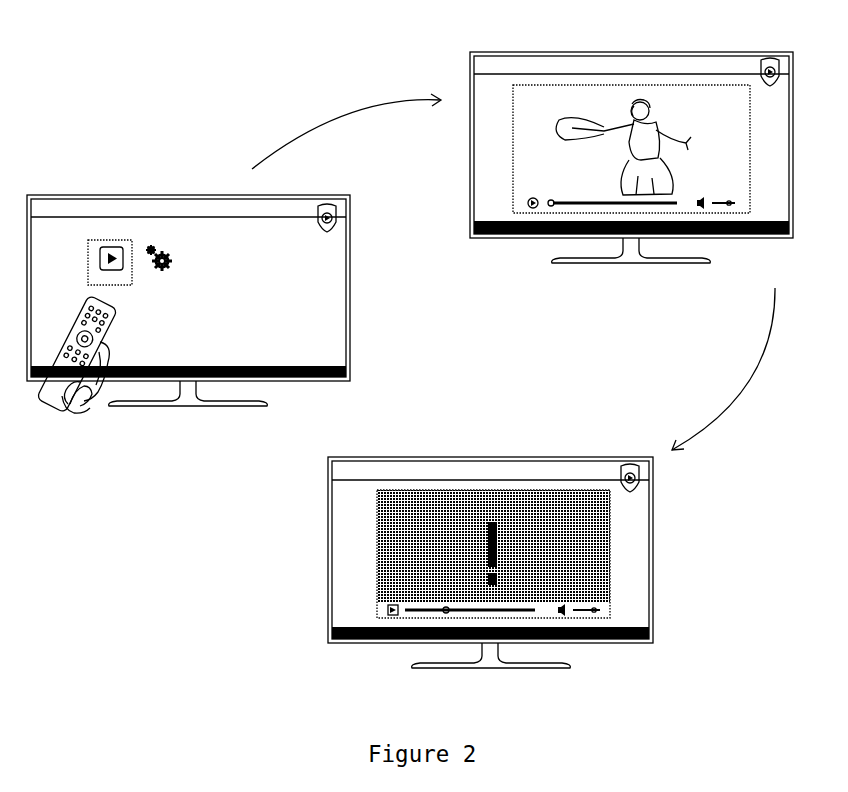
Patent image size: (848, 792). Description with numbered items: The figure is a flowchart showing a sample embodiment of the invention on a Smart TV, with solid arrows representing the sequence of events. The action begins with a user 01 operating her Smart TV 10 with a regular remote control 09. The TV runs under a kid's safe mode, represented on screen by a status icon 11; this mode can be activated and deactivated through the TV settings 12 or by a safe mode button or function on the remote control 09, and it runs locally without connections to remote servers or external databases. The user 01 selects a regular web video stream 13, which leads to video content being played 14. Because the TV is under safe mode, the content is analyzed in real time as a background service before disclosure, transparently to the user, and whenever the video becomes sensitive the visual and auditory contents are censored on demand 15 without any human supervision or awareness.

The Smart TV 10 is at (157, 195).
The status icon 11 is at (334, 206).
The TV settings 12 is at (172, 253).
The web video stream 13 is at (133, 248).
The video content being played 14 is at (752, 149).
The censored on demand 15 is at (612, 556).
The remote control 09 is at (106, 334).
The user 01 is at (101, 357).